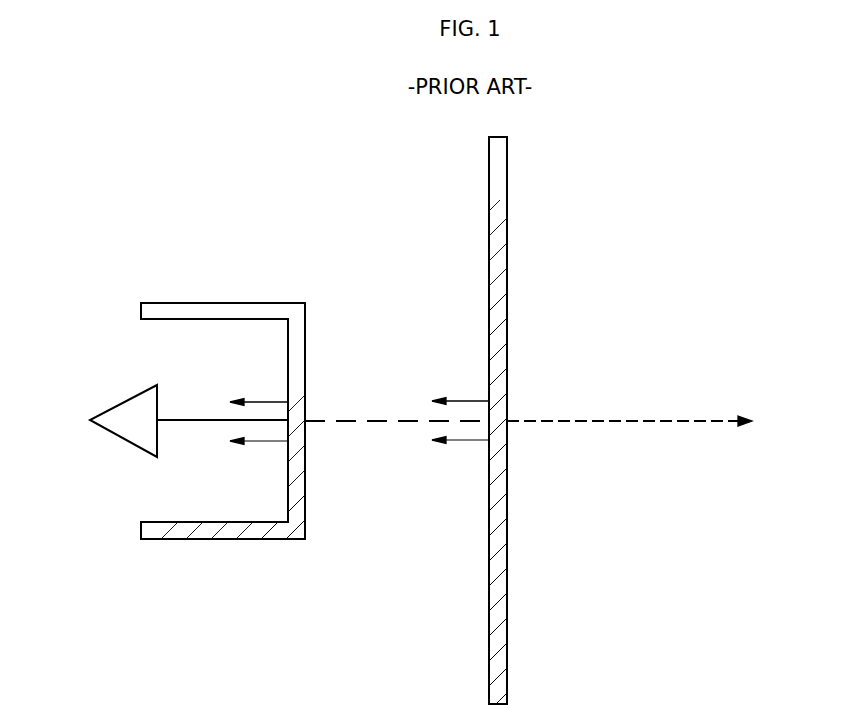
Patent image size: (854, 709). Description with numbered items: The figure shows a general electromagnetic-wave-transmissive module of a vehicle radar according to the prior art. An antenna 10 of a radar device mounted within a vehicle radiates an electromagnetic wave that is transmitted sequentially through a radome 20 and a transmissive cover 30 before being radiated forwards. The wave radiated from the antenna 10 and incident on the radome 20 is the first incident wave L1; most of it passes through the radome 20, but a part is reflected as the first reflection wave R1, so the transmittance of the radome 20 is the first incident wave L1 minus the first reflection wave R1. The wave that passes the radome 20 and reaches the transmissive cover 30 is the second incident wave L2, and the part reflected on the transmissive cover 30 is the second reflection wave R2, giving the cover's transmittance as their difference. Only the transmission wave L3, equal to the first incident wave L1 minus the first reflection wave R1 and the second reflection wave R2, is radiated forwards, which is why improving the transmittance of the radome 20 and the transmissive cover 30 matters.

The antenna 10 is at (123, 401).
The radome 20 is at (230, 303).
The transmissive cover 30 is at (507, 218).
The first incident wave L1 is at (190, 418).
The first reflection wave R1 is at (258, 459).
The second incident wave L2 is at (360, 419).
The second reflection wave R2 is at (460, 458).
The transmission wave L3 is at (655, 419).